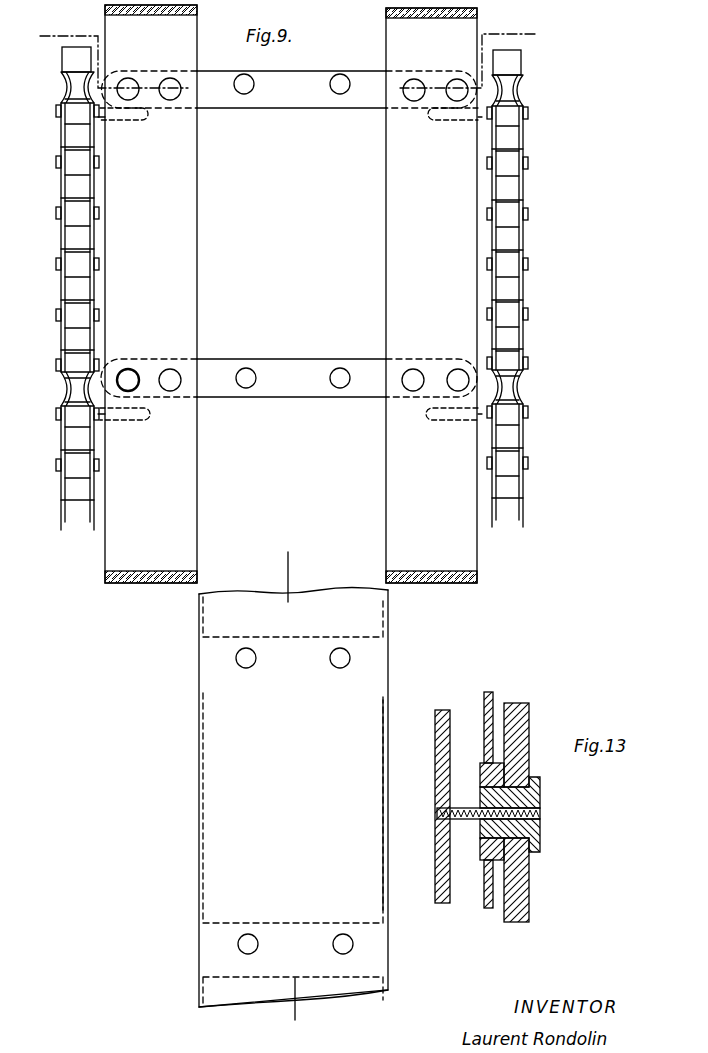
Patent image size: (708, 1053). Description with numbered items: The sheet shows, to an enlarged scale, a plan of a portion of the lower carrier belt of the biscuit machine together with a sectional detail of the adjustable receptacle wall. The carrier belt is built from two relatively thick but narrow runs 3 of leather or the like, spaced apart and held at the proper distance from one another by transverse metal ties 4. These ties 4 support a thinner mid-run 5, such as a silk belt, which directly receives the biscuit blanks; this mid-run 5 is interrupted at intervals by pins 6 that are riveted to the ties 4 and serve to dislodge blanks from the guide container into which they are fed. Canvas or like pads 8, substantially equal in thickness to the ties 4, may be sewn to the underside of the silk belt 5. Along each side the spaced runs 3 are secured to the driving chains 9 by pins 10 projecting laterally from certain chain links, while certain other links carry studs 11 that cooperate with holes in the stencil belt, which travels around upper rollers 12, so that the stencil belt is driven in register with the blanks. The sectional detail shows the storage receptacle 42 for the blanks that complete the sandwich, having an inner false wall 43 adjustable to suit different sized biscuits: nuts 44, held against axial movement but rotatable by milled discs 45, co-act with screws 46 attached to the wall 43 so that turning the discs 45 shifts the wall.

In FIG. 9, the runs 3 is at (291, 294).
In FIG. 9, the transverse metal ties 4 is at (306, 105).
In FIG. 9, the mid-run 5 is at (293, 798).
In FIG. 9, the pins 6 is at (330, 84).
In FIG. 9, the pads 8 is at (386, 756).
In FIG. 9, the driving chains 9 is at (61, 290).
In FIG. 9, the pins 10 is at (448, 430).
In FIG. 9, the studs 11 is at (70, 83).
In FIG. 9, the upper rollers 12 is at (299, 785).
In FIG. 13, the storage receptacle 42 is at (485, 887).
In FIG. 13, the inner false wall 43 is at (436, 781).
In FIG. 13, the nuts 44 is at (541, 798).
In FIG. 13, the milled discs 45 is at (527, 706).
In FIG. 13, the screws 46 is at (464, 806).